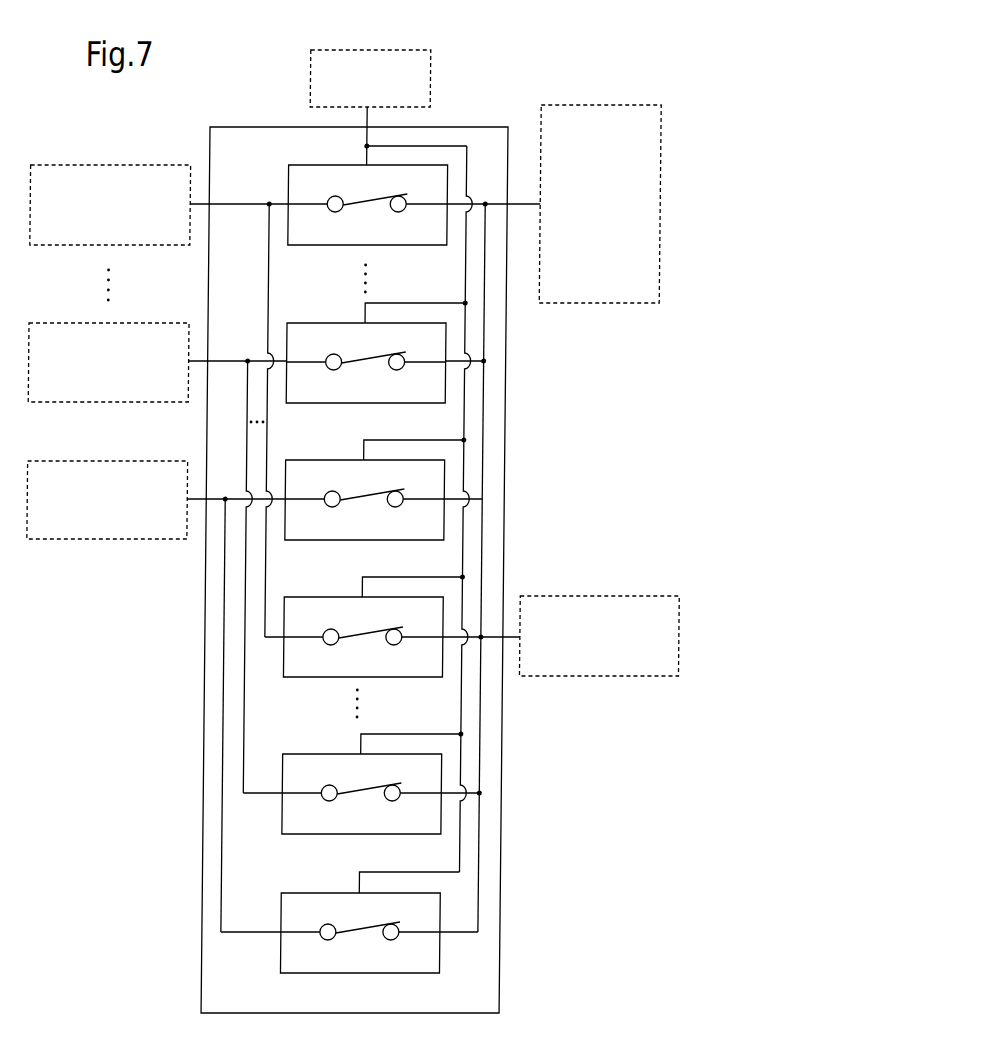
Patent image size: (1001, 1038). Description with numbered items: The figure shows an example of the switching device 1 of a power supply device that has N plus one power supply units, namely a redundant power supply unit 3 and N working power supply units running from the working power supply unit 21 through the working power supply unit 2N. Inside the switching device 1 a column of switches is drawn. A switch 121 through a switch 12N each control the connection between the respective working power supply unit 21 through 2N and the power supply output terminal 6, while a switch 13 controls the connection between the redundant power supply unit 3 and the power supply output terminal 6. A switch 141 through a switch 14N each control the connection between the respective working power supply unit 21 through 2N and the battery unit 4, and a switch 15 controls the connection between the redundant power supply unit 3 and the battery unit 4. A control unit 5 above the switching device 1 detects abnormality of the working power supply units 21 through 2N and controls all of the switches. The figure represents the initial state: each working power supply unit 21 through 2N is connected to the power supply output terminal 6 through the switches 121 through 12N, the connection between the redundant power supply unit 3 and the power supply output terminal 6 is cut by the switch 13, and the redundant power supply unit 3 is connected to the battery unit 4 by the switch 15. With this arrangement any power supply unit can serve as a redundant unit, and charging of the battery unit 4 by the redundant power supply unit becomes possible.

The switching device 1 is at (200, 990).
The working power supply unit 21 is at (134, 165).
The working power supply unit 2N is at (132, 322).
The redundant power supply unit 3 is at (131, 461).
The battery unit 4 is at (602, 597).
The control unit 5 is at (430, 72).
The power supply output terminal 6 is at (606, 104).
The switch 121 is at (329, 165).
The switch 12N is at (327, 322).
The switch 13 is at (322, 460).
The switch 141 is at (323, 597).
The switch 14N is at (322, 754).
The switch 15 is at (320, 893).